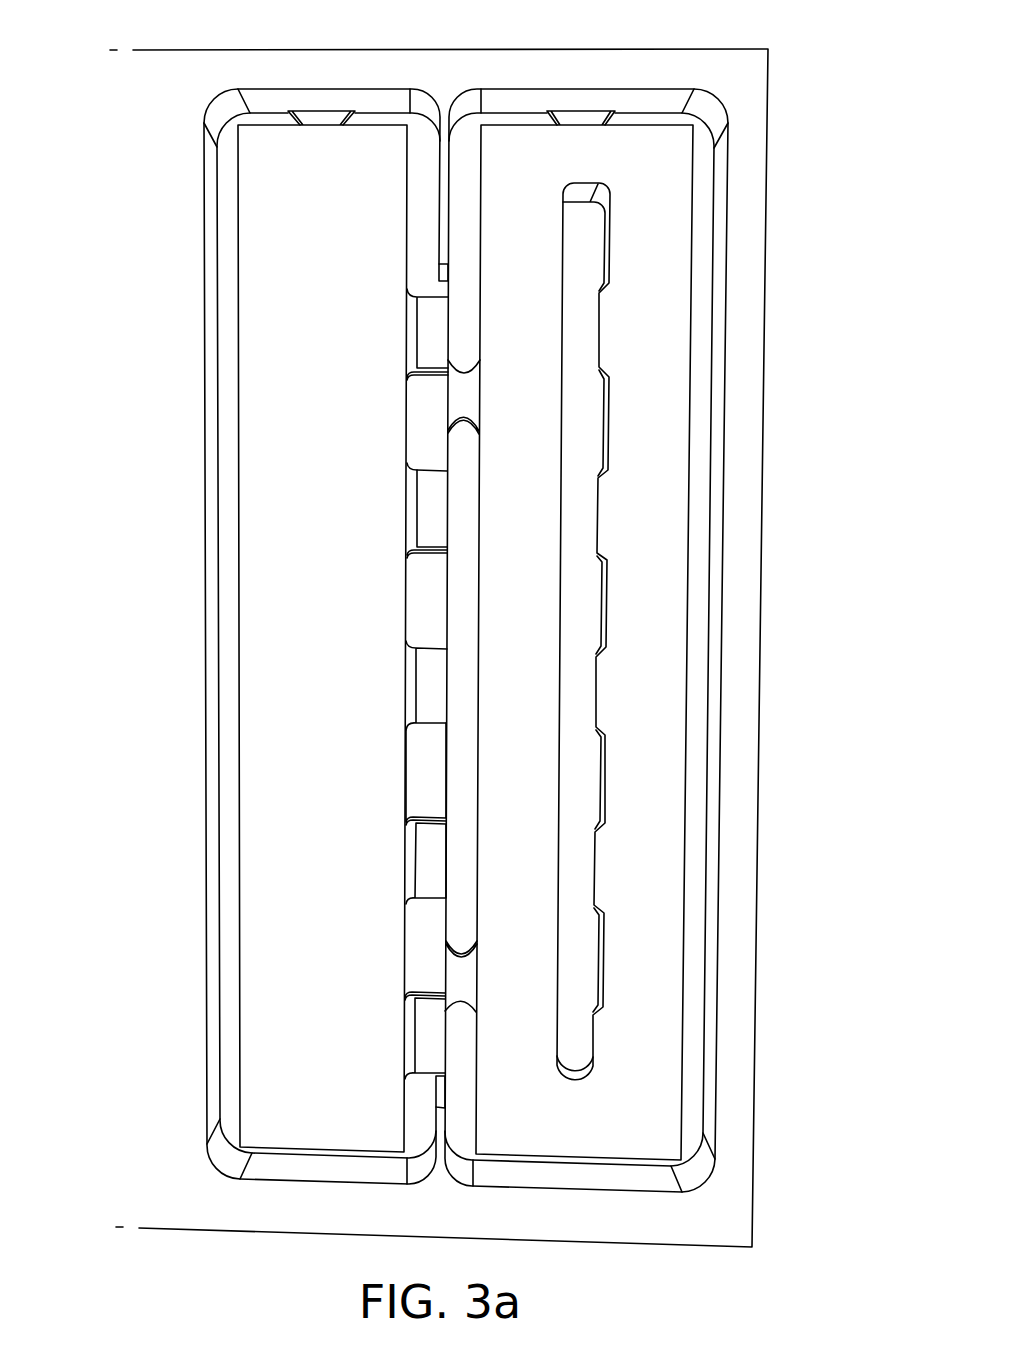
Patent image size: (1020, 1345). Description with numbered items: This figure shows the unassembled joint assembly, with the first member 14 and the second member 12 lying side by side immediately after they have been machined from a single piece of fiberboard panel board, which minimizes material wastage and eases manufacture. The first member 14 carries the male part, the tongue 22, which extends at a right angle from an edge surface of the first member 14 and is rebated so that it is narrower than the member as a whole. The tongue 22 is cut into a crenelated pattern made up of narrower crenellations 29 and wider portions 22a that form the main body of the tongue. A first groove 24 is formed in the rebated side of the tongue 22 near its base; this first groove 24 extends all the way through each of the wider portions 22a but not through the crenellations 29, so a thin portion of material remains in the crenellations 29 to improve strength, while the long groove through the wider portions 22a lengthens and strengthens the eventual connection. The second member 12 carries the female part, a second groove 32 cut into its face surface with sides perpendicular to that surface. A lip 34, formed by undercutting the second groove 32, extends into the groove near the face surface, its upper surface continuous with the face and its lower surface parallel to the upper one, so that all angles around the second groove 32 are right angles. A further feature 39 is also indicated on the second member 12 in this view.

The second member 12 is at (273, 556).
The first member 14 is at (653, 662).
The tongue 22 is at (417, 778).
The wider portions 22a is at (428, 337).
The first groove 24 is at (398, 874).
The crenellations 29 is at (399, 426).
The second groove 32 is at (601, 174).
The lip 34 is at (598, 852).
The slot protrusion 39 is at (626, 411).